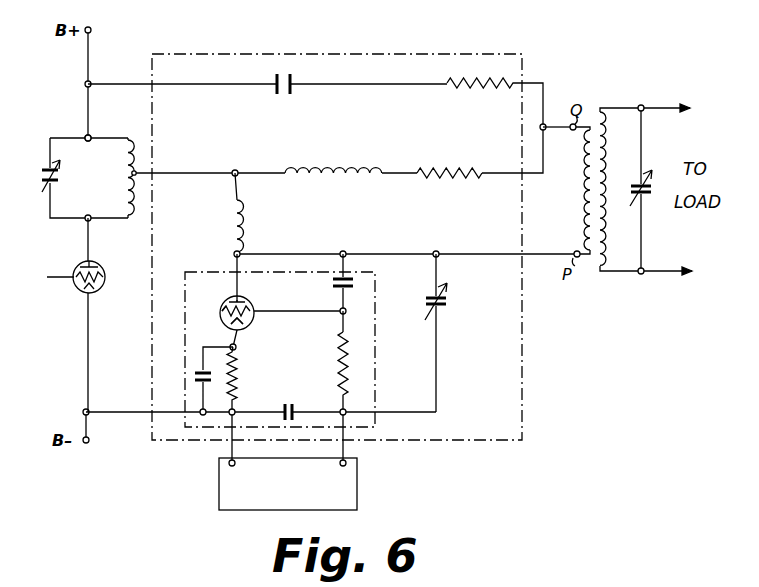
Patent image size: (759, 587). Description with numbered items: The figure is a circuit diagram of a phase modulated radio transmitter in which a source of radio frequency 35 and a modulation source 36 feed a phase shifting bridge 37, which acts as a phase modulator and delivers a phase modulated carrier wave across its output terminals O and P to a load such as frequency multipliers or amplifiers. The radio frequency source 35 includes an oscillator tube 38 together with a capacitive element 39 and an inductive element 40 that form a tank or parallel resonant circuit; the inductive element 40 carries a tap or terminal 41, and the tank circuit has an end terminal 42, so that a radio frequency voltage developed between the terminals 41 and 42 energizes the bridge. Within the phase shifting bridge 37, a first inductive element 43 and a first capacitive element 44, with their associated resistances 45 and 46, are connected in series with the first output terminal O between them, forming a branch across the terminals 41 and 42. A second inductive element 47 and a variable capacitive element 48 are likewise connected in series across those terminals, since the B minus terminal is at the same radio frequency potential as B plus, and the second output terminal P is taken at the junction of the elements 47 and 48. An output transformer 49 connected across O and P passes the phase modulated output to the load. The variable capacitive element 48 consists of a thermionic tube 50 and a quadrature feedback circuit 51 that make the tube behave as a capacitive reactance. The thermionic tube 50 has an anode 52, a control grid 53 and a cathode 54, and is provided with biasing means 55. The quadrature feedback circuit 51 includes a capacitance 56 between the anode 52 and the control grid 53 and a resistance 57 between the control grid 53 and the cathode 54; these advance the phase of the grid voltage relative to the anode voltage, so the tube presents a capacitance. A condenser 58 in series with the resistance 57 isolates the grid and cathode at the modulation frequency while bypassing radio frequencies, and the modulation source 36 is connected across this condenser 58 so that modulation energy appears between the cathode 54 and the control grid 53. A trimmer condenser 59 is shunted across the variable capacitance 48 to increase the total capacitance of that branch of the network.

The source of radio frequency 35 is at (62, 249).
The modulation source 36 is at (364, 499).
The phase shifting bridge 37 is at (199, 61).
The oscillator tube 38 is at (76, 288).
The capacitive element 39 is at (47, 176).
The inductive element 40 is at (144, 137).
The tap or terminal 41 is at (138, 173).
The end terminal 42 is at (82, 136).
The first inductive element 43 is at (320, 170).
The first capacitive element 44 is at (280, 89).
The resistance 45 is at (465, 171).
The resistance 46 is at (488, 88).
The second inductive element 47 is at (244, 234).
The variable capacitive element 48 is at (197, 278).
The output transformer 49 is at (634, 97).
The thermionic tube 50 is at (222, 300).
The quadrature feedback circuit 51 is at (370, 330).
The anode 52 is at (241, 298).
The control grid 53 is at (220, 312).
The cathode 54 is at (244, 324).
The biasing means 55 is at (226, 403).
The capacitance 56 is at (346, 288).
The resistance 57 is at (348, 360).
The condenser 58 is at (295, 408).
The trimmer condenser 59 is at (445, 311).